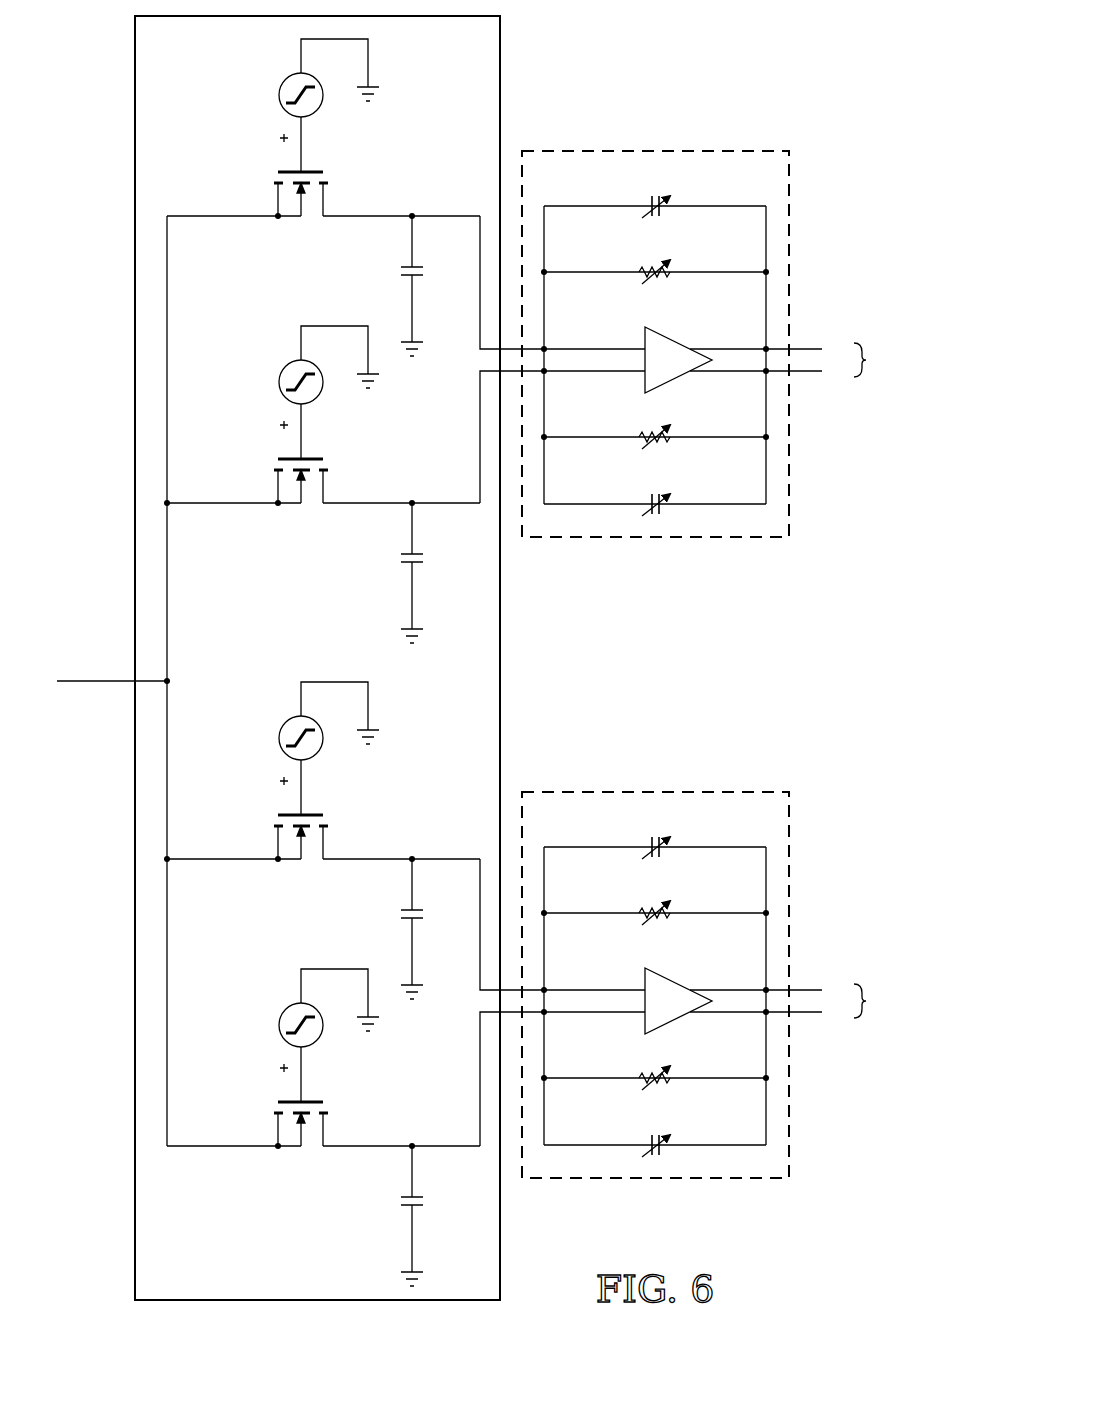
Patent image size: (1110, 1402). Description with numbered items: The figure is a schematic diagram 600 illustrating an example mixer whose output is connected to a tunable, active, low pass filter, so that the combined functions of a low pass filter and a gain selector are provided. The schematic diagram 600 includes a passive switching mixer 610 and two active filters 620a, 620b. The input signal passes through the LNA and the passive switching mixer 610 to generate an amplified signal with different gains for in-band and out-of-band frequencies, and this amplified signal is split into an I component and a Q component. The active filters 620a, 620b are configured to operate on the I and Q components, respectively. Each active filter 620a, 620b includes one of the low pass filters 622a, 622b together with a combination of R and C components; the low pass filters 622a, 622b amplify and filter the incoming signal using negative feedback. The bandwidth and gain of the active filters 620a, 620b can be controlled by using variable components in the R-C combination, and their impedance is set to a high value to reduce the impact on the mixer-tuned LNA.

The schematic diagram 600 is at (838, 80).
The passive switching mixer 610 is at (508, 684).
The active filter 620a is at (740, 149).
The active filter 620b is at (740, 790).
The low pass filter 622a is at (645, 338).
The low pass filter 622b is at (645, 1022).